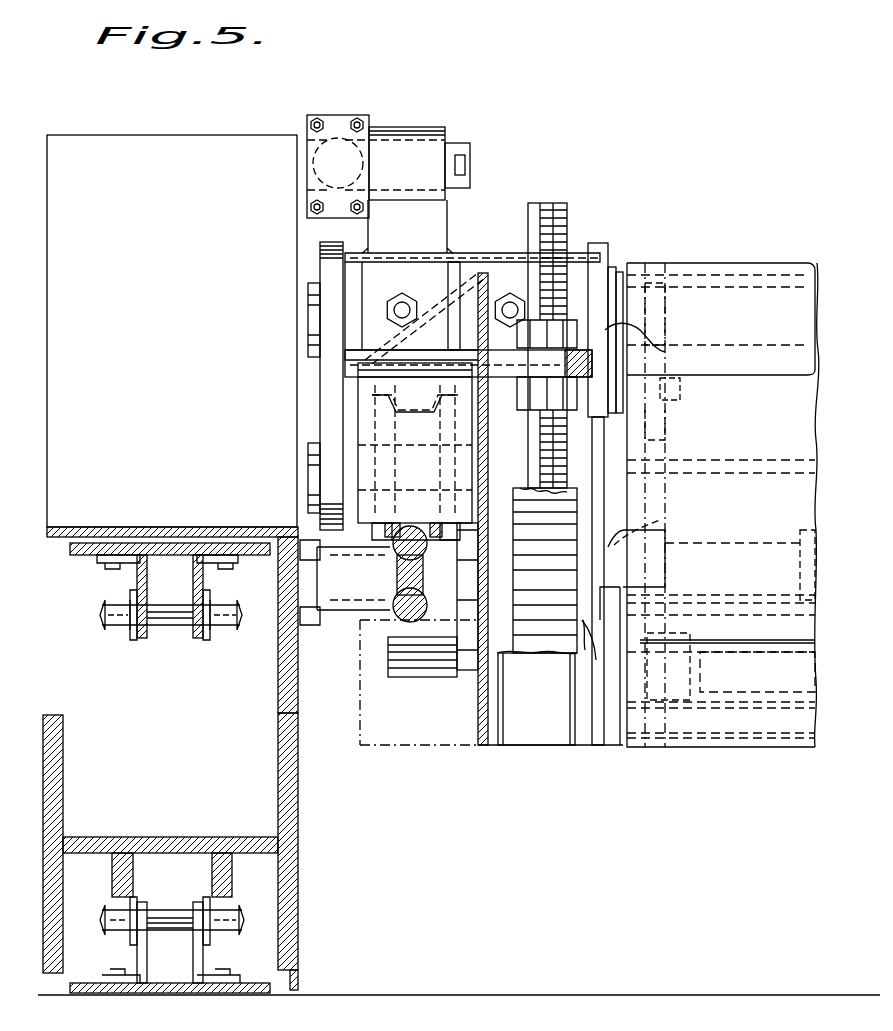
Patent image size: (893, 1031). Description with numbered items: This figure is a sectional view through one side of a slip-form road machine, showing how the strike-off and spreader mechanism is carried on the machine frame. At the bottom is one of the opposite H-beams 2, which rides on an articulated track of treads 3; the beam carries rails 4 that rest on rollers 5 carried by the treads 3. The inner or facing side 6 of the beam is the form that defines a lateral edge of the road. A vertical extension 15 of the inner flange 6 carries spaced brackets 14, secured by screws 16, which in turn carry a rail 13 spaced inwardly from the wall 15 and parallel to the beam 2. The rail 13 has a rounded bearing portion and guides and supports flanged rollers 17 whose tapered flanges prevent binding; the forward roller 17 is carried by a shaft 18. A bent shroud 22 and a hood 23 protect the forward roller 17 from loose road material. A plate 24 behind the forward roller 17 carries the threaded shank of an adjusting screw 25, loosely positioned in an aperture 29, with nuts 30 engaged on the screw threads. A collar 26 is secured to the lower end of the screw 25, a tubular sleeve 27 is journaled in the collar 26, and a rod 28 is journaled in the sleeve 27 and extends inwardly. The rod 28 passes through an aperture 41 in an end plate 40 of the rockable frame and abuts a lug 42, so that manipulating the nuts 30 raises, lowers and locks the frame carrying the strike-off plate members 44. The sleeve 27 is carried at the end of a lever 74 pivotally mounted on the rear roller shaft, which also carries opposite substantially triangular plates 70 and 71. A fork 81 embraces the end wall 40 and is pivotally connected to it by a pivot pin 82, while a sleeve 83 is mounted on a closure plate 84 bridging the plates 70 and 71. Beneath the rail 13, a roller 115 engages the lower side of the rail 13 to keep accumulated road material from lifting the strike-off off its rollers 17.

The H-beam 2 is at (63, 803).
The tread 3 is at (265, 558).
The rail 4 is at (232, 890).
The roller 5 is at (225, 908).
The inner flange 6 is at (298, 812).
The rail 13 is at (427, 553).
The bracket 14 is at (356, 610).
The vertical extension 15 is at (298, 676).
The screw 16 is at (320, 626).
The flanged roller 17 is at (395, 548).
The shaft 18 is at (368, 540).
The shroud 22 is at (472, 603).
The hood 23 is at (415, 443).
The plate 24 is at (503, 370).
The adjusting screw 25 is at (562, 238).
The collar 26 is at (545, 633).
The tubular sleeve 27 is at (587, 617).
The rod 28 is at (690, 540).
The aperture 29 is at (640, 322).
The nut 30 is at (560, 326).
The end plate 40 is at (650, 445).
The aperture 41 is at (650, 520).
The lug 42 is at (810, 528).
The plate member 44 is at (788, 438).
The triangular plate 70 is at (332, 382).
The triangular plate 71 is at (608, 254).
The lever 74 is at (505, 536).
The fork 81 is at (665, 336).
The pivot pin 82 is at (680, 398).
The sleeve 83 is at (448, 218).
The closure plate 84 is at (468, 256).
The roller 115 is at (424, 678).